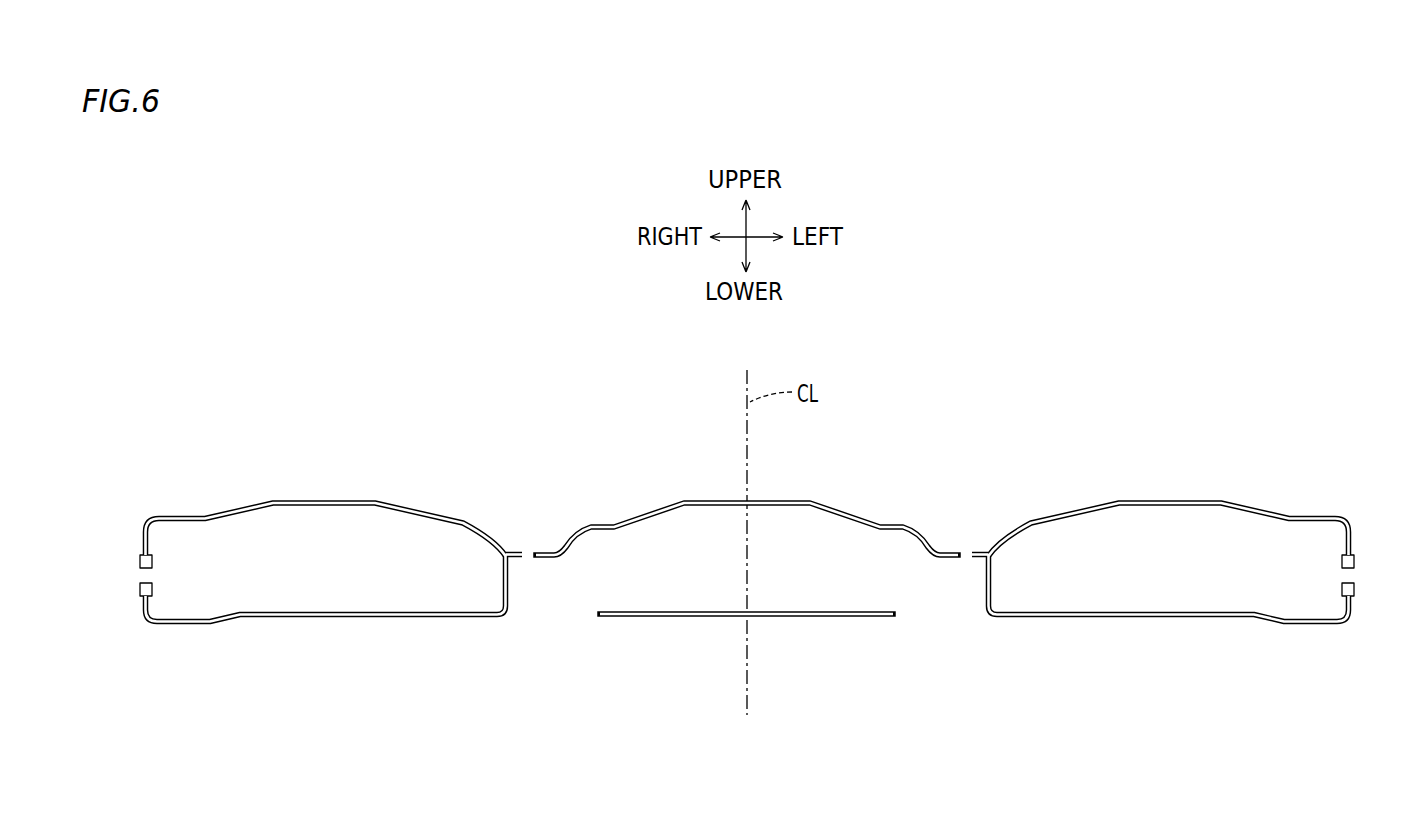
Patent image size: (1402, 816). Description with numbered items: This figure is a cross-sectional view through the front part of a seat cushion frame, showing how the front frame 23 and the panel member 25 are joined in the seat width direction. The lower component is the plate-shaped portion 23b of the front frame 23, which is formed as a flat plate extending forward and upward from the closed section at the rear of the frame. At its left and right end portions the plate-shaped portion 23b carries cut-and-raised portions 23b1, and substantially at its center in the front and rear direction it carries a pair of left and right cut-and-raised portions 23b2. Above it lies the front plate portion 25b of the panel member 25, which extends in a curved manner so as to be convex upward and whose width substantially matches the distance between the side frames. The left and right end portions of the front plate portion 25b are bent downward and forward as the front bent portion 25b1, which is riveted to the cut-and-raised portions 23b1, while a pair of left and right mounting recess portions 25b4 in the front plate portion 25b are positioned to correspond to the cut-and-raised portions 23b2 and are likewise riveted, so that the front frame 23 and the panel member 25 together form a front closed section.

The panel member 25 is at (712, 500).
The front plate portion 25b is at (828, 506).
The front bent portion 25b1 is at (142, 548).
The mounting recess portions 25b4 is at (505, 550).
The front frame 23 is at (641, 620).
The plate-shaped portion 23b is at (840, 620).
The cut-and-raised portions 23b1 is at (152, 602).
The cut-and-raised portions 23b2 is at (510, 584).